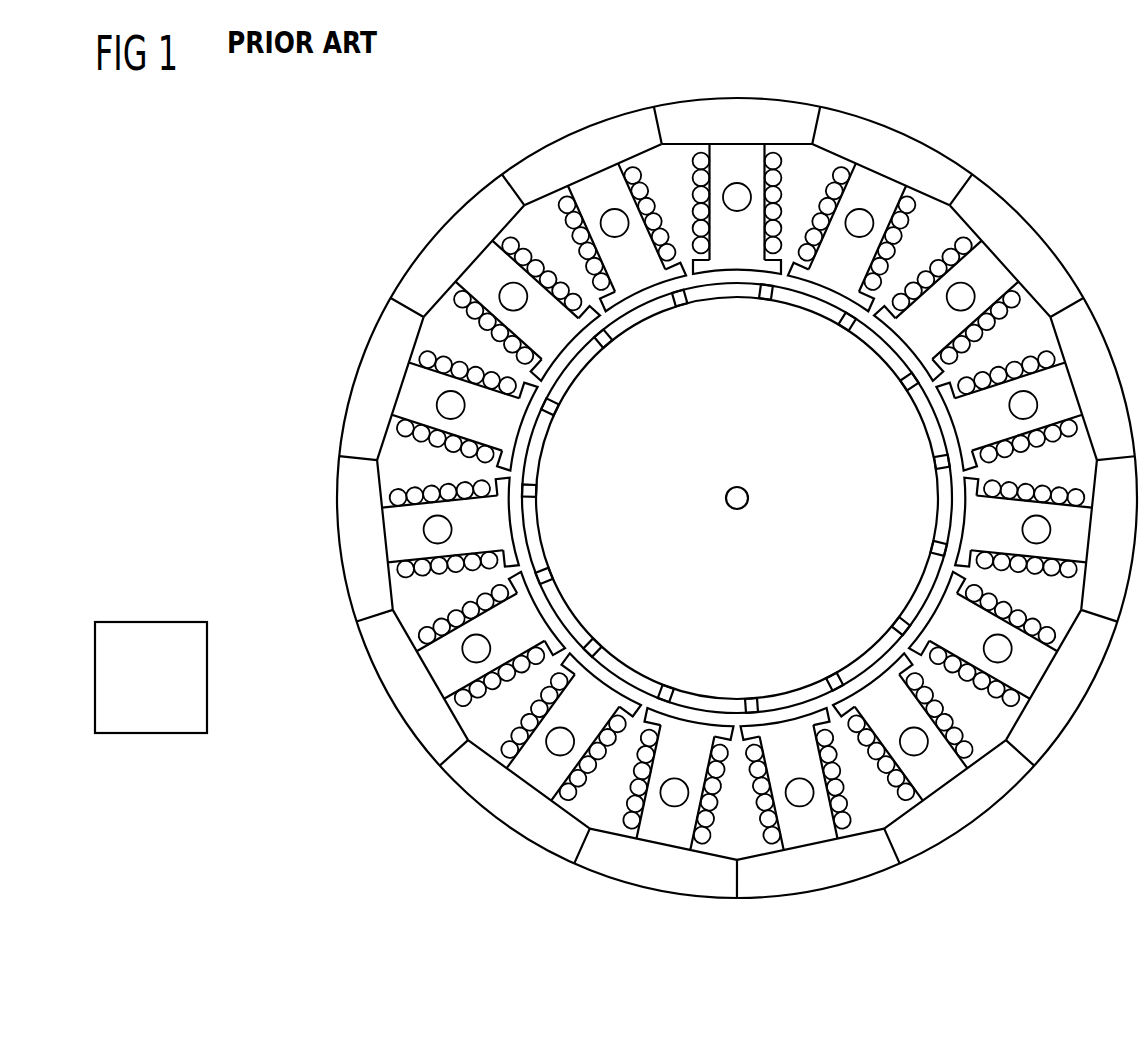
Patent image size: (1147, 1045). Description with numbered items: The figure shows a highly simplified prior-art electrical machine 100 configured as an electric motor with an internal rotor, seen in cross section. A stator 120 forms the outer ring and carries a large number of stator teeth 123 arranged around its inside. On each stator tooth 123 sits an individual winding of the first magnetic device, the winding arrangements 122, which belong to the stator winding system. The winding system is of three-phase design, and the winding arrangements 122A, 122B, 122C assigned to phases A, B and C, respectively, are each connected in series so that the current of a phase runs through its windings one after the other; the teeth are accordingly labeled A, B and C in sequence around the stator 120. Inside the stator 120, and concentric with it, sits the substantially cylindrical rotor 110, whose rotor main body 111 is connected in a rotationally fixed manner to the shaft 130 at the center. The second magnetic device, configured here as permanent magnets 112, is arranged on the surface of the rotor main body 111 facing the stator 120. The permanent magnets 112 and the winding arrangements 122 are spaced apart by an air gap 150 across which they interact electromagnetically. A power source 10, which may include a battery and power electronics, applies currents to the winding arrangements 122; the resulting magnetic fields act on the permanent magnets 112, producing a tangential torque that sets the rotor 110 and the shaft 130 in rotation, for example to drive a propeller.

The power source 10 is at (150, 735).
The electrical machine 100 is at (324, 124).
The rotor 110 is at (558, 486).
The rotor main body 111 is at (787, 444).
The permanent magnets 112 is at (568, 378).
The stator 120 is at (1012, 178).
The winding arrangements 122 is at (667, 243).
The winding arrangements of phase A 122A is at (868, 288).
The winding arrangements of phase B 122B is at (668, 256).
The winding arrangements of phase C 122C is at (764, 250).
The stator teeth 123 is at (452, 247).
The shaft 130 is at (726, 496).
The air gap 150 is at (813, 716).